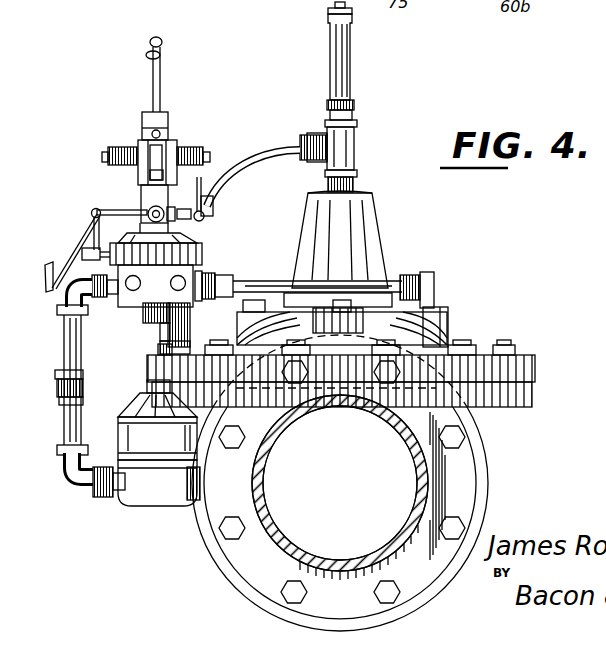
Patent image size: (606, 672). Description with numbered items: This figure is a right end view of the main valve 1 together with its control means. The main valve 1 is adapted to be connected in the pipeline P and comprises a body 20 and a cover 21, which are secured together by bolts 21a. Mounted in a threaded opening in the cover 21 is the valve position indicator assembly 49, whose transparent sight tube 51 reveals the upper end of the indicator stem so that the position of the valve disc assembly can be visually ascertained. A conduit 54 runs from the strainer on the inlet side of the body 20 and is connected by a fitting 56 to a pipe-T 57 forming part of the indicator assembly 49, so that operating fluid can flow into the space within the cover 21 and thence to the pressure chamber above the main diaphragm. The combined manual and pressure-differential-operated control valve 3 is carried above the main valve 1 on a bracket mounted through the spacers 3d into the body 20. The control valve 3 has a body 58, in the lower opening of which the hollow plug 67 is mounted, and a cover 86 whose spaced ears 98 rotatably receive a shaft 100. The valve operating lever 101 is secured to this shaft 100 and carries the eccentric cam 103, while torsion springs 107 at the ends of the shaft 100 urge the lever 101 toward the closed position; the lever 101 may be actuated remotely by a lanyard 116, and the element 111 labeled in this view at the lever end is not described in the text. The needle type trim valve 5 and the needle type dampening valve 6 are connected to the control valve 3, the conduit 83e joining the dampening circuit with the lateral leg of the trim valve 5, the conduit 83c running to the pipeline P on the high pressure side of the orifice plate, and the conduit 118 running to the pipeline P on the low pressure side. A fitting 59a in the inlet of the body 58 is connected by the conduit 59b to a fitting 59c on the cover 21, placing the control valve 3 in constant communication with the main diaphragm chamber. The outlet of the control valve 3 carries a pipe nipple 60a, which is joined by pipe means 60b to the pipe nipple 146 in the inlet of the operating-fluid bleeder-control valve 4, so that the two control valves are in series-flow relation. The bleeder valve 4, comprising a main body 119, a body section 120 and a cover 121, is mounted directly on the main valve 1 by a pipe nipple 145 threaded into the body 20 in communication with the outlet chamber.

The main valve 1 is at (443, 295).
The combined manual and pressure-differential-operated control valve 3 is at (123, 201).
The spacers 3d is at (341, 381).
The operating-fluid bleeder-control valve 4 is at (135, 503).
The needle type trim valve 5 is at (147, 201).
The needle type dampening valve 6 is at (82, 250).
The body 20 is at (480, 457).
The cover 21 is at (446, 322).
The bolts 21a is at (293, 343).
The valve position indicator assembly 49 is at (329, 24).
The transparent sight tube 51 is at (331, 55).
The conduit 54 is at (265, 148).
The fitting 56 is at (310, 138).
The pipe-T 57 is at (354, 144).
The body 58 is at (188, 298).
The fitting 59a is at (208, 271).
The conduit 59b is at (348, 282).
The fitting 59c is at (434, 274).
The pipe nipple 60a is at (106, 300).
The pipe means 60b is at (67, 345).
The hollow plug 67 is at (148, 333).
The conduit 83c is at (57, 262).
The conduit 83e is at (90, 212).
The cover 86 is at (204, 198).
The ears 98 is at (140, 146).
The shaft 100 is at (108, 155).
The valve operating lever 101 is at (162, 43).
The cam 103 is at (165, 140).
The torsion spring 107 is at (118, 147).
The stem block 111 is at (150, 112).
The lanyard 116 is at (161, 56).
The conduit 118 is at (205, 206).
The main body 119 is at (147, 506).
The body section 120 is at (125, 438).
The cover 121 is at (145, 405).
The pipe nipple 145 is at (198, 503).
The pipe nipple 146 is at (105, 497).
The pipeline P is at (400, 410).